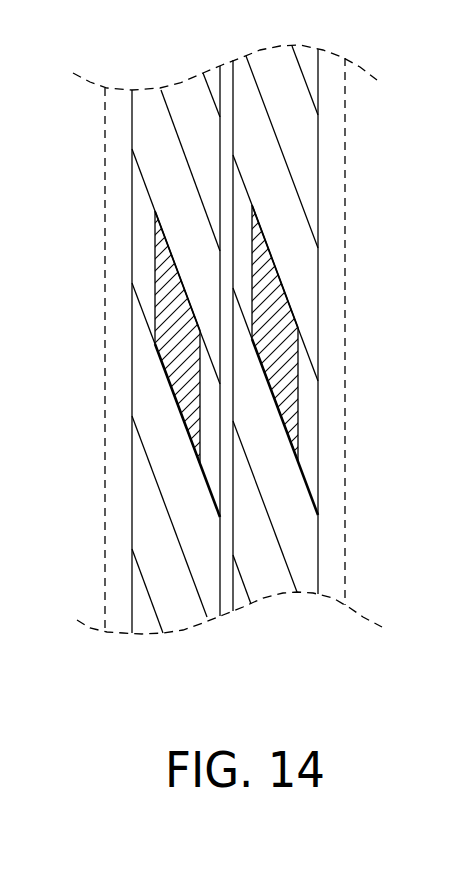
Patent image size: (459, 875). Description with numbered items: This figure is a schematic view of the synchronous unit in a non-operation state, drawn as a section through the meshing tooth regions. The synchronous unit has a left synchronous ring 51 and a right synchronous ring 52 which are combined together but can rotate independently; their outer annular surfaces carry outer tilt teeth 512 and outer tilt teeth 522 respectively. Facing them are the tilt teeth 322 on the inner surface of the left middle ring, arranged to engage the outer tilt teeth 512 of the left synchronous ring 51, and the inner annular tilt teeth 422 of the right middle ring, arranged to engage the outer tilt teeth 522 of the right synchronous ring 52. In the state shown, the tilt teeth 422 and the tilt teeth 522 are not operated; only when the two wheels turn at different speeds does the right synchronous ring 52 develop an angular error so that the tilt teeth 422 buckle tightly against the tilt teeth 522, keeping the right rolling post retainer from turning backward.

The left synchronous ring 51 is at (121, 349).
The outer tilt teeth of the left synchronous ring 512 is at (121, 266).
The tilt teeth of the left middle ring 322 is at (229, 356).
The right synchronous ring 52 is at (331, 328).
The outer tilt teeth of the right synchronous ring 522 is at (333, 268).
The tilt teeth of the right middle ring 422 is at (229, 345).